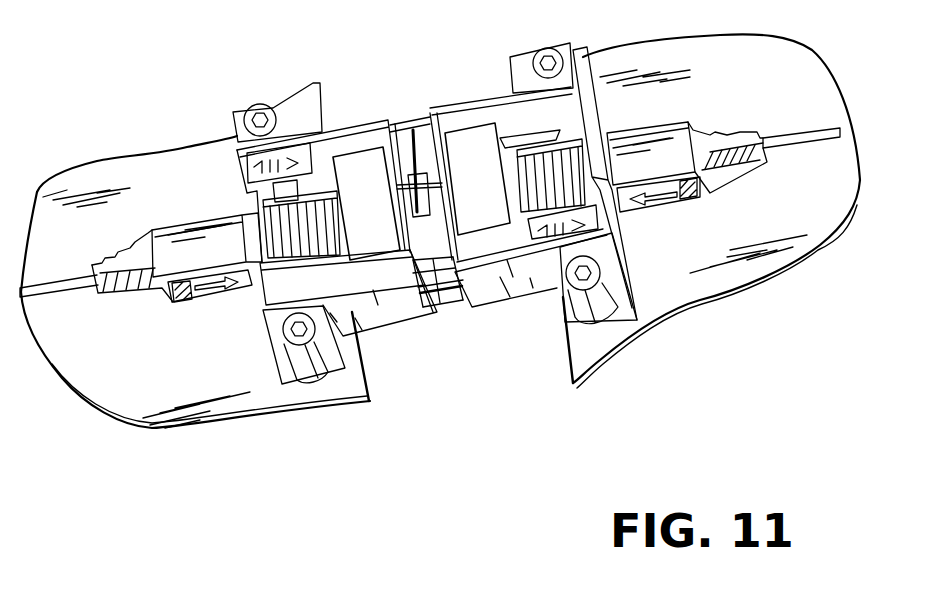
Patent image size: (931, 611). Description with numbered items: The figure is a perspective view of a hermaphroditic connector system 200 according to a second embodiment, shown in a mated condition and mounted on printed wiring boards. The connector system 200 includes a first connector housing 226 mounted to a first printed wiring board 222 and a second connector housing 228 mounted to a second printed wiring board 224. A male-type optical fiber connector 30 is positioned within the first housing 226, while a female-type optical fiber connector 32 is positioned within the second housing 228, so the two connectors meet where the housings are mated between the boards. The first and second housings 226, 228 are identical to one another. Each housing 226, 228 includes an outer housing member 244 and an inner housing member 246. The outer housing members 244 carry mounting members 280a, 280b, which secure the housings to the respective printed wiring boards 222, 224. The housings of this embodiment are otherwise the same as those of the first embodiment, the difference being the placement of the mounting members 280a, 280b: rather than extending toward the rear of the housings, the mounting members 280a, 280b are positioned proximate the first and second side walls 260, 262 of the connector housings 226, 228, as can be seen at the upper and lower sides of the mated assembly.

The connector system 200 is at (440, 258).
The first printed wiring board 222 is at (713, 290).
The second printed wiring board 224 is at (140, 407).
The first connector housing 226 is at (533, 282).
The second connector housing 228 is at (368, 140).
The outer housing member 244 is at (407, 310).
The inner housing member 246 is at (513, 138).
The first side wall 260 is at (357, 320).
The second side wall 262 is at (335, 128).
The mounting member 280a is at (275, 348).
The mounting member 280b is at (240, 137).
The male-type optical fiber connector 30 is at (648, 167).
The female-type optical fiber connector 32 is at (217, 240).